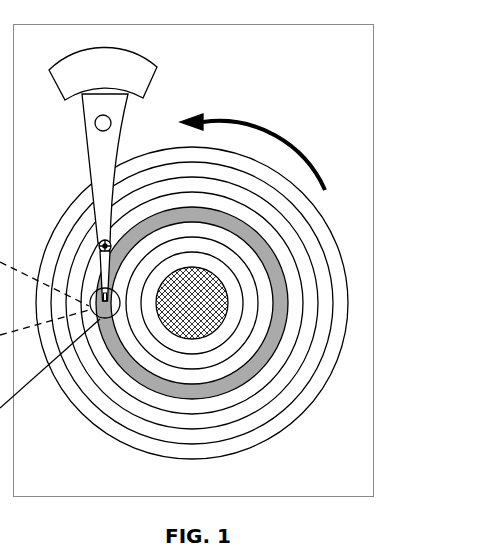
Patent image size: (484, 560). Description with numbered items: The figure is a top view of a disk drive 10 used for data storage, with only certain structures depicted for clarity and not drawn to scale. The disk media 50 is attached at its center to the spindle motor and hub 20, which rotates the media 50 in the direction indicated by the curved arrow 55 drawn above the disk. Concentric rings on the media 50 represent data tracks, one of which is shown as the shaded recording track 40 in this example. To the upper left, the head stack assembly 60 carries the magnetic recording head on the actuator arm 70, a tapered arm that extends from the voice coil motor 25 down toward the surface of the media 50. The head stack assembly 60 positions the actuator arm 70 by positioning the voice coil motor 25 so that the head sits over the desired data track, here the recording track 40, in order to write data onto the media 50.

The disk drive 10 is at (374, 108).
The spindle motor and hub 20 is at (192, 303).
The voice coil motor 25 is at (157, 67).
The recording track 40 is at (289, 303).
The disk media 50 is at (277, 434).
The arrow 55 is at (252, 125).
The head stack assembly 60 is at (95, 128).
The actuator arm 70 is at (100, 163).